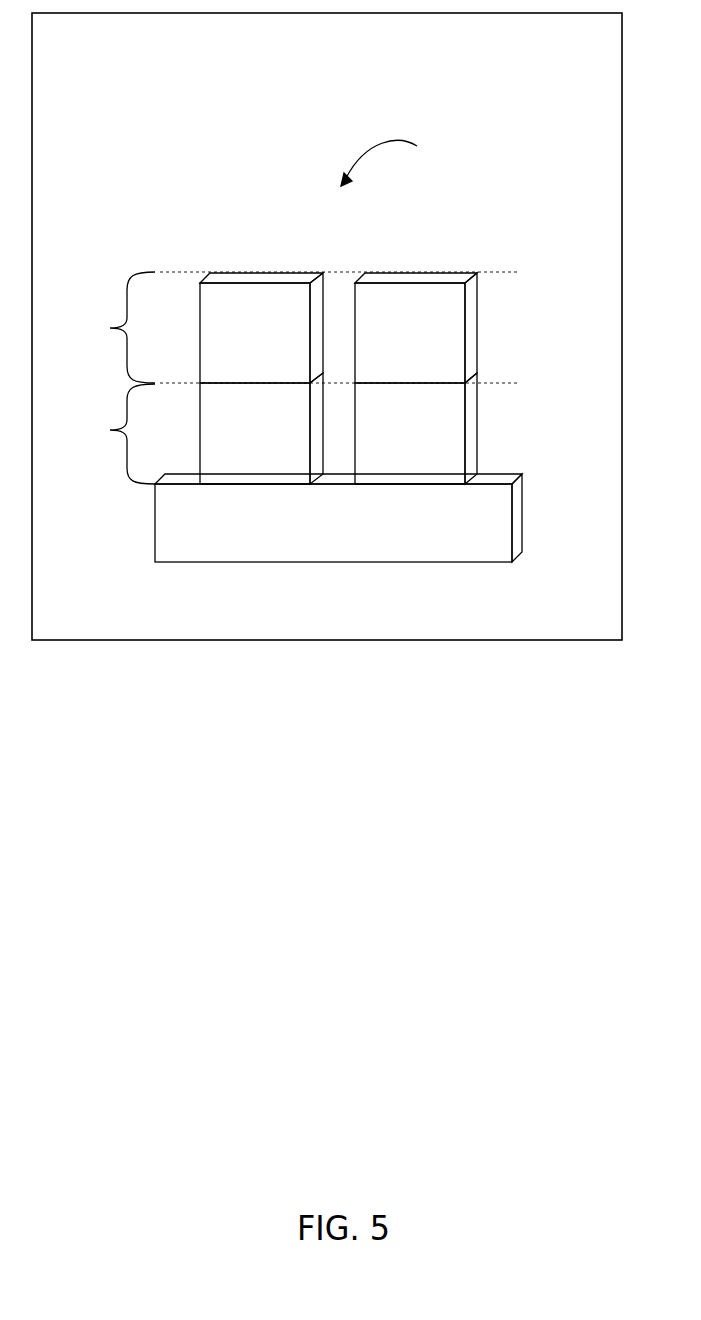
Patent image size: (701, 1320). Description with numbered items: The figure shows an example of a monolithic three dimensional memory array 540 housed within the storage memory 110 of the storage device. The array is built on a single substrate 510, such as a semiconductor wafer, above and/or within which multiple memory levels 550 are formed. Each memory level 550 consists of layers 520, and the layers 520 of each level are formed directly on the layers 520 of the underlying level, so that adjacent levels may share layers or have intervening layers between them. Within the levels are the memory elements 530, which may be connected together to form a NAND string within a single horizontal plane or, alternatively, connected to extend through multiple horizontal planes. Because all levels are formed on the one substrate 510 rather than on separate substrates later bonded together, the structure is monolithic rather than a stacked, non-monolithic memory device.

The storage memory 110 is at (555, 640).
The substrate 510 is at (466, 539).
The layers 520 is at (106, 378).
The memory elements 530 is at (280, 344).
The monolithic three dimensional memory array 540 is at (408, 158).
The memory levels 550 is at (508, 272).